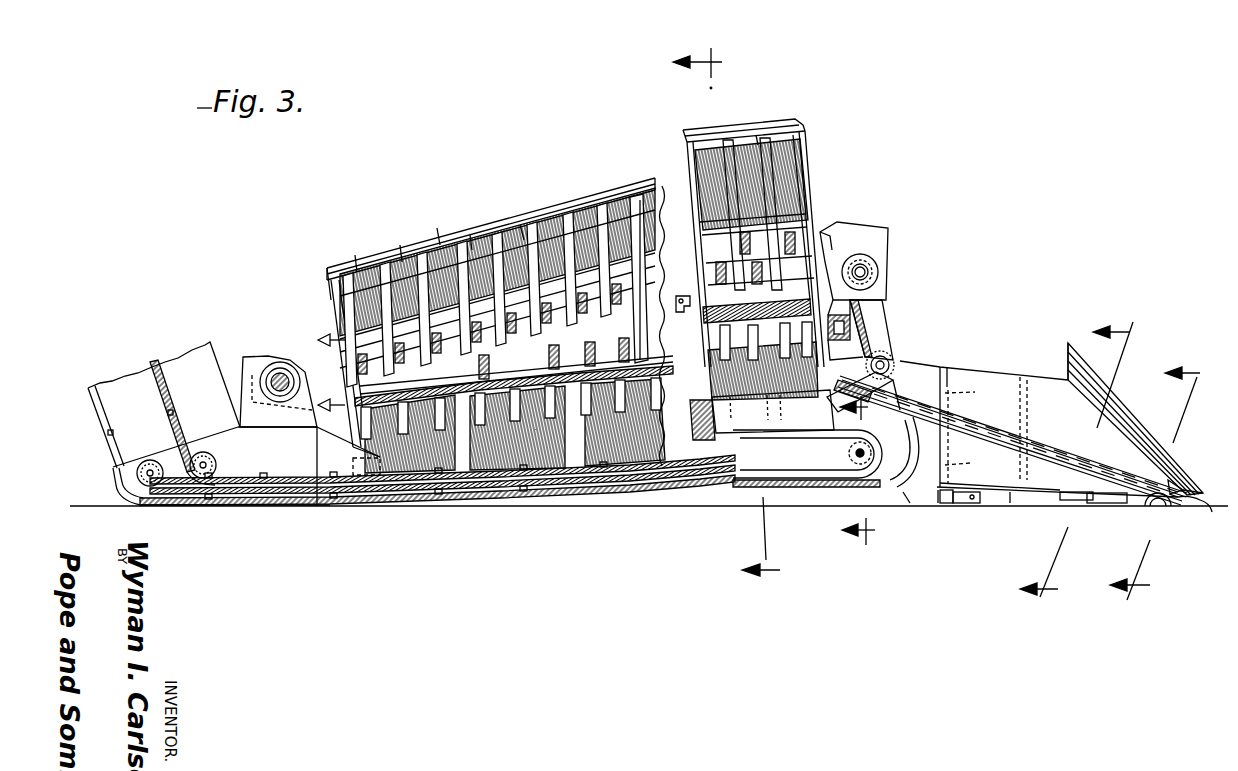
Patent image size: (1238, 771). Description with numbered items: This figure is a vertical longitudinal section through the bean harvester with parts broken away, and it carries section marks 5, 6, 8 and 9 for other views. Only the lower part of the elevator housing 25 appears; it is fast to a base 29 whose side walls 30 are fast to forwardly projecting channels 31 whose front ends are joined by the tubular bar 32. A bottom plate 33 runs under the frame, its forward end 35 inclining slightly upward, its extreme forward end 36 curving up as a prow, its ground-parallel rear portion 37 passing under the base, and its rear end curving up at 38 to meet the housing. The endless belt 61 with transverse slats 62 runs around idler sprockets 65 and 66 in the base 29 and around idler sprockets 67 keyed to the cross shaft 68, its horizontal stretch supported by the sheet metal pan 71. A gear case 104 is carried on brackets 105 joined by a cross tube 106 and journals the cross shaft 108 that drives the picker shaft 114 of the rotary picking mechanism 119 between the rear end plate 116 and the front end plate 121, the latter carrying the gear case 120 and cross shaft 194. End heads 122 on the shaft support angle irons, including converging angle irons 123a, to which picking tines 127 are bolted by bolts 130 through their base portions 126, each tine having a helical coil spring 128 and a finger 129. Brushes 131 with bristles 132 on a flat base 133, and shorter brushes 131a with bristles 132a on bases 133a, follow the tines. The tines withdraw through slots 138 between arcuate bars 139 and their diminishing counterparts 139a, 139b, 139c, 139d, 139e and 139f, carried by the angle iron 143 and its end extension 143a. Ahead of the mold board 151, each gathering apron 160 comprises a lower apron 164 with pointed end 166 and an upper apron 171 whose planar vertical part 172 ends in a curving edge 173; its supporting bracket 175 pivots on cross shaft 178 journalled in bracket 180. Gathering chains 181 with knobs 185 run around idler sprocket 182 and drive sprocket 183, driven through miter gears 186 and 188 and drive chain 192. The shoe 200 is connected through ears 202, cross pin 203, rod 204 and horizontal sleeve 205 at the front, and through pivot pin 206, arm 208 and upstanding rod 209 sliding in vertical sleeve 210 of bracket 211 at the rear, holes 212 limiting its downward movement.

The elevator housing 25 is at (183, 360).
The base 29 is at (277, 466).
The side walls 30 is at (300, 455).
The channels 31 is at (523, 503).
The bar 32 is at (868, 333).
The bottom plate 33 is at (473, 508).
The forward end 35 is at (782, 488).
The extreme forward end 36 is at (897, 470).
The base plate 37 is at (334, 507).
The upwardly curved rear end 38 is at (116, 487).
The endless belt 61 is at (578, 490).
The transverse slats 62 is at (437, 504).
The idler sprockets 65 is at (150, 460).
The idler sprockets 66 is at (203, 452).
The idler sprockets 67 is at (847, 453).
The cross shaft 68 is at (870, 451).
The sheet metal pan 71 is at (612, 487).
The gear case 104 is at (318, 343).
The brackets 105 is at (250, 362).
The cross tube 106 is at (280, 362).
The cross shaft 108 is at (290, 384).
The picker shaft 114 is at (690, 306).
The rear end plate 116 is at (331, 294).
The rotary picking mechanism 119 is at (666, 232).
The gear case 120 is at (880, 232).
The front end plate 121 is at (806, 148).
The end head 122 is at (340, 300).
The converging angle irons 123a is at (505, 368).
The base portion 126 is at (728, 318).
The picking tines 127 is at (583, 358).
The helical coil spring 128 is at (720, 295).
The finger 129 is at (355, 275).
The bolts 130 is at (632, 380).
The brushes 131 is at (637, 196).
The brushes 131a is at (490, 212).
The bristles 132 is at (703, 160).
The bristles 132a is at (458, 220).
The flat base 133 is at (608, 358).
The base 133a is at (417, 423).
The slots 138 is at (720, 140).
The arcuate bars 139 is at (757, 137).
The arcuate bar 139a is at (527, 210).
The arcuate bar 139b is at (520, 225).
The arcuate bar 139c is at (470, 235).
The arcuate bar 139d is at (437, 228).
The arcuate bar 139e is at (400, 245).
The arcuate bar 139f is at (355, 255).
The angle iron 143 is at (599, 186).
The end extension 143a is at (330, 268).
The mold board 151 is at (773, 411).
The gathering apron 160 is at (1070, 348).
The lower apron 164 is at (1040, 478).
The pointed end 166 is at (1180, 502).
The upper apron 171 is at (1098, 358).
The planar vertical part 172 is at (1057, 420).
The curving edge 173 is at (1135, 420).
The supporting bracket 175 is at (882, 415).
The cross shaft 178 is at (894, 361).
The bracket 180 is at (847, 344).
The chains 181 is at (1176, 483).
The idler sprocket 182 is at (1186, 491).
The drive sprocket 183 is at (849, 393).
The knobs 185 is at (1204, 506).
The miter gear 186 is at (884, 392).
The miter gear 188 is at (894, 372).
The drive chain 192 is at (893, 330).
The cross shaft 194 is at (878, 272).
The shoe 200 is at (1011, 504).
The ears 202 is at (1160, 503).
The cross pin 203 is at (1158, 507).
The rod 204 is at (1066, 487).
The horizontal sleeve 205 is at (1105, 503).
The transverse pivot pin 206 is at (973, 503).
The arm 208 is at (960, 503).
The upstanding rod 209 is at (938, 490).
The vertical sleeve 210 is at (955, 466).
The bracket 211 is at (903, 492).
The transverse holes 212 is at (960, 398).
The section line 5- 5 is at (1078, 460).
The section line 6- 6 is at (1159, 479).
The section line 8- 8 is at (735, 314).
The section line 9- 9 is at (864, 470).